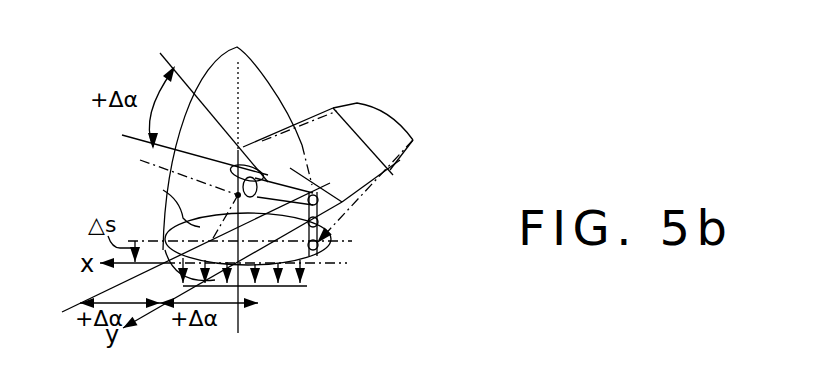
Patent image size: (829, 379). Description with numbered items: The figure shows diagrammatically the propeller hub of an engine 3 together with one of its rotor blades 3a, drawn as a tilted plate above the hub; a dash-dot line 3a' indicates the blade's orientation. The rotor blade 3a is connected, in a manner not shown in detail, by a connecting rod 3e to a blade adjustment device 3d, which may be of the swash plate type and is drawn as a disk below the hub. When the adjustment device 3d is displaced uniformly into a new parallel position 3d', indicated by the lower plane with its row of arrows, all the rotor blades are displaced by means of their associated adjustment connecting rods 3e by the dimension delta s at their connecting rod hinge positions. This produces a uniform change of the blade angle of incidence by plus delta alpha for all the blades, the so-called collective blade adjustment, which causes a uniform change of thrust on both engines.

The engine 3 is at (268, 113).
The rotor blade 3a is at (345, 152).
The surface normal of reflecting surface 3a' is at (378, 191).
The blade adjustment device 3d is at (155, 198).
The new parallel position 3d' is at (282, 264).
The connecting rod 3e is at (320, 240).